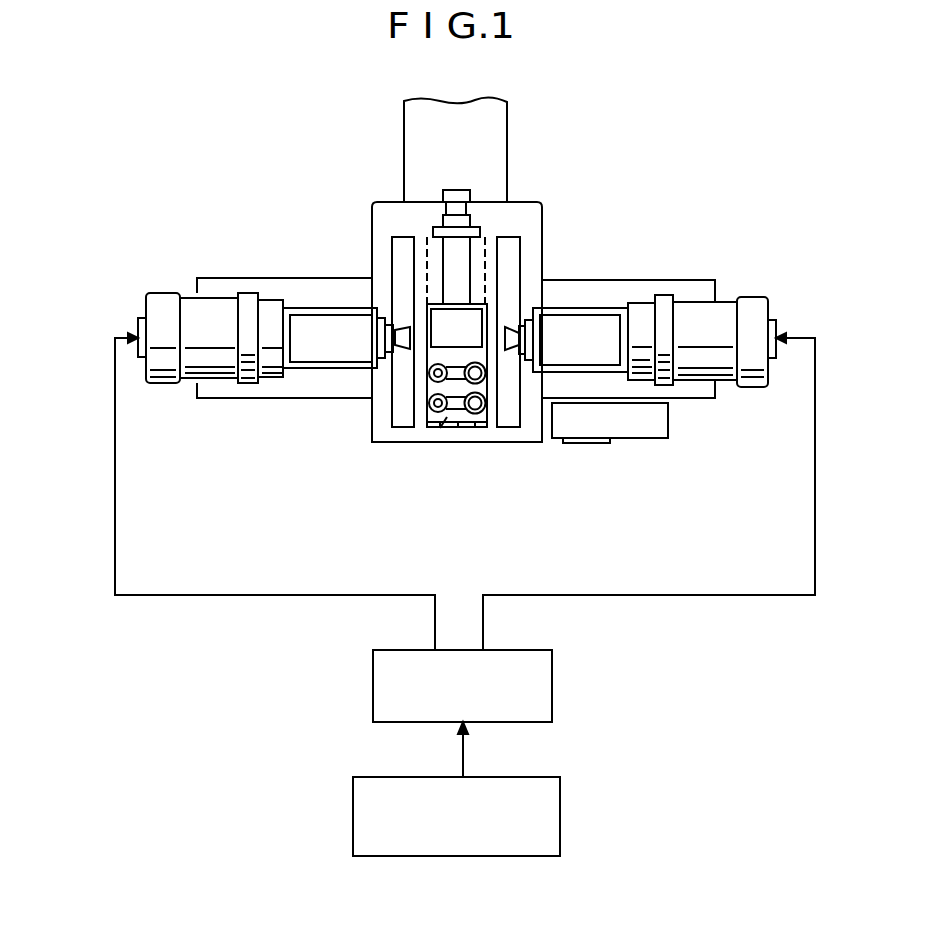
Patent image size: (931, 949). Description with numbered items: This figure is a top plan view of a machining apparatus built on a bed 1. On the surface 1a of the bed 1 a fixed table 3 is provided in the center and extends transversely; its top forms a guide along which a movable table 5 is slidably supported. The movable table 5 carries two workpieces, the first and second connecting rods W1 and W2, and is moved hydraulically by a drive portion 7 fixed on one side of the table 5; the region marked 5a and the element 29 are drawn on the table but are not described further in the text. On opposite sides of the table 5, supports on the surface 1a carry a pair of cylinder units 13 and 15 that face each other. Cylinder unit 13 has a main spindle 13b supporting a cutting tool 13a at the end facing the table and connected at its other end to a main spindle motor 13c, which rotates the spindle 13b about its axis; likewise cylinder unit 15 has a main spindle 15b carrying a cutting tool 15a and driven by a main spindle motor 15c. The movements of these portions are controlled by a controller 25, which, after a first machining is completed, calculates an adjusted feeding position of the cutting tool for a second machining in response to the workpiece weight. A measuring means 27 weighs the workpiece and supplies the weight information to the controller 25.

The bed 1 is at (658, 274).
The surface 1a is at (603, 295).
The fixed table 3 is at (477, 428).
The movable table 5 is at (460, 428).
The base plate tick 5a is at (440, 428).
The drive portion 7 is at (450, 223).
The cylinder unit 13 is at (622, 381).
The cutting tool 13a is at (509, 346).
The main spindle 13b is at (528, 342).
The main spindle motor 13c is at (753, 313).
The cylinder unit 15 is at (270, 291).
The cutting tool 15a is at (408, 330).
The main spindle 15b is at (382, 333).
The main spindle motor 15c is at (205, 310).
The controller 25 is at (553, 698).
The measuring means 27 is at (561, 829).
The window 29 is at (467, 323).
The first connecting rod W1 is at (429, 374).
The second connecting rod W2 is at (429, 404).